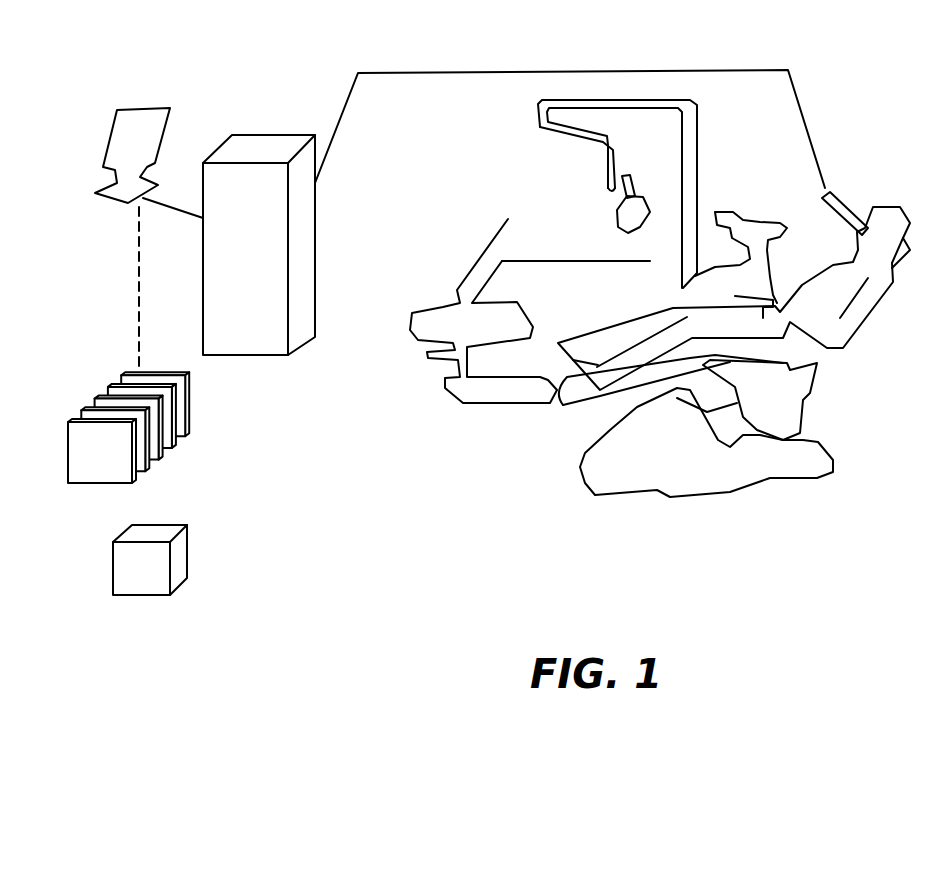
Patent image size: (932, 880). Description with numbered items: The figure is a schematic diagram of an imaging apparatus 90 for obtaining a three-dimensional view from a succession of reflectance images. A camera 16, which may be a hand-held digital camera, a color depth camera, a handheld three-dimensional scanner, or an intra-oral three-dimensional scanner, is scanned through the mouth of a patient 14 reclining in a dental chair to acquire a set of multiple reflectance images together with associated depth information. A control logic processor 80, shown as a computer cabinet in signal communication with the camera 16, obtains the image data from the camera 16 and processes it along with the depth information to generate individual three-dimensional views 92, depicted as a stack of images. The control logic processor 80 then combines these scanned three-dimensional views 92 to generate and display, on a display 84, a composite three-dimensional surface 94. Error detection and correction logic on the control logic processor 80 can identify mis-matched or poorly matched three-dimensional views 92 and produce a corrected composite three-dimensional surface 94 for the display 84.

The patient 14 is at (868, 303).
The camera 16 is at (848, 194).
The control logic processor 80 is at (259, 245).
The display 84 is at (148, 108).
The imaging apparatus 90 is at (667, 315).
The 3-D views 92 is at (202, 435).
The composite 3-D surface 94 is at (188, 557).